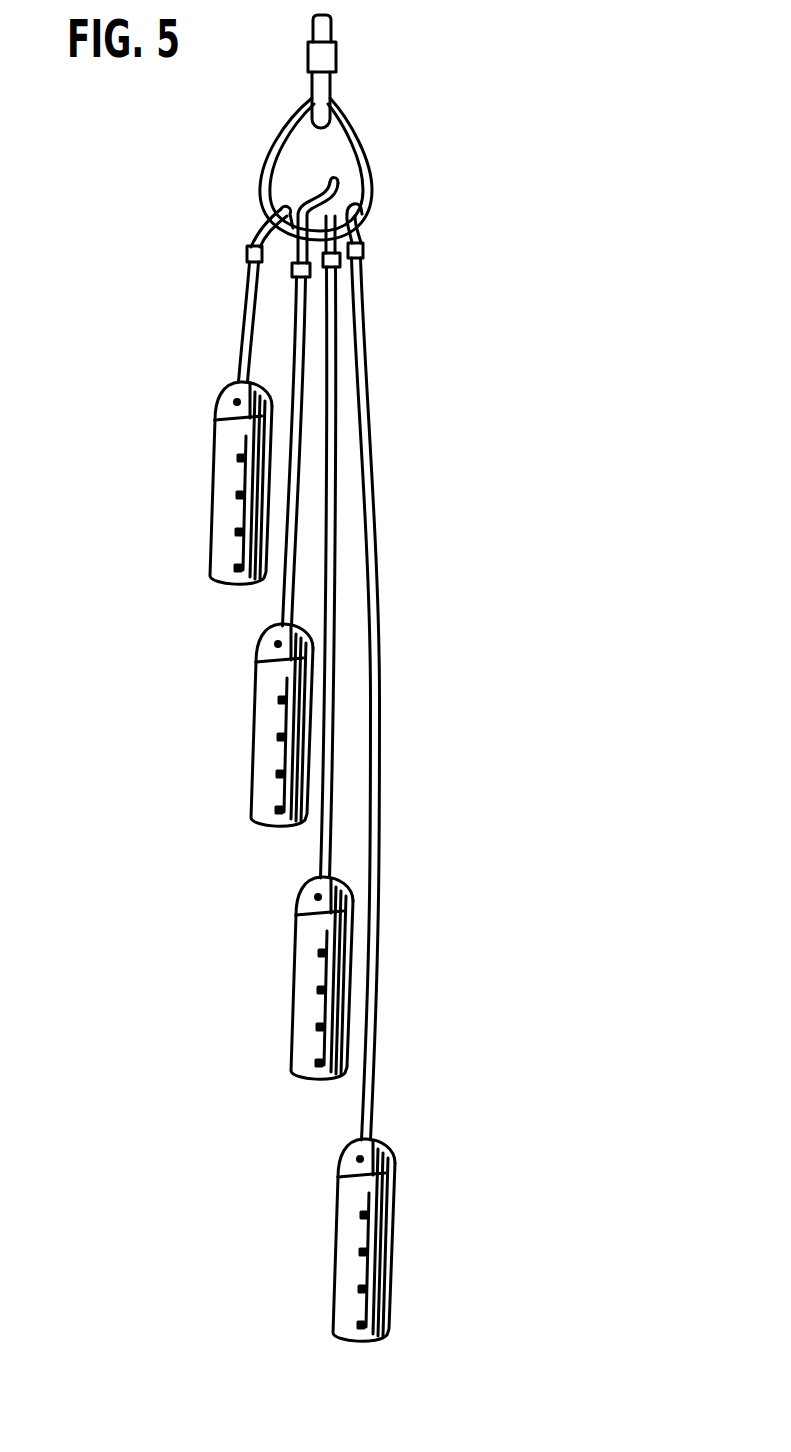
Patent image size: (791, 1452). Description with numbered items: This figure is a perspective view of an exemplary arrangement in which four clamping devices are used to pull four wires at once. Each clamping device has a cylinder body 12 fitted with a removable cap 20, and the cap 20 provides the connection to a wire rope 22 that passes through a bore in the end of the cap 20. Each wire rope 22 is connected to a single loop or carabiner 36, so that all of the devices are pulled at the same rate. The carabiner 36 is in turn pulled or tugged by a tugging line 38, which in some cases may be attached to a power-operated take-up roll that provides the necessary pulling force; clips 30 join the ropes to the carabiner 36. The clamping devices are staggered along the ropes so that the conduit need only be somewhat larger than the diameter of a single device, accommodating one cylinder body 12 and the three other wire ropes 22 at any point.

The cylinder body 12 is at (222, 478).
The removable cap 20 is at (220, 413).
The wire rope 22 is at (240, 322).
The clip hook 30 is at (262, 211).
The loop or carabiner 36 is at (358, 152).
The tugging line 38 is at (336, 62).